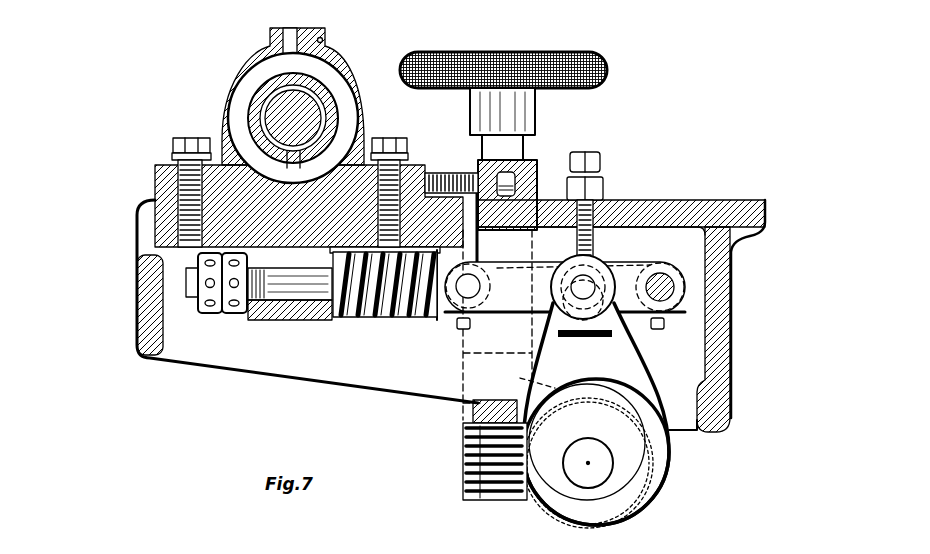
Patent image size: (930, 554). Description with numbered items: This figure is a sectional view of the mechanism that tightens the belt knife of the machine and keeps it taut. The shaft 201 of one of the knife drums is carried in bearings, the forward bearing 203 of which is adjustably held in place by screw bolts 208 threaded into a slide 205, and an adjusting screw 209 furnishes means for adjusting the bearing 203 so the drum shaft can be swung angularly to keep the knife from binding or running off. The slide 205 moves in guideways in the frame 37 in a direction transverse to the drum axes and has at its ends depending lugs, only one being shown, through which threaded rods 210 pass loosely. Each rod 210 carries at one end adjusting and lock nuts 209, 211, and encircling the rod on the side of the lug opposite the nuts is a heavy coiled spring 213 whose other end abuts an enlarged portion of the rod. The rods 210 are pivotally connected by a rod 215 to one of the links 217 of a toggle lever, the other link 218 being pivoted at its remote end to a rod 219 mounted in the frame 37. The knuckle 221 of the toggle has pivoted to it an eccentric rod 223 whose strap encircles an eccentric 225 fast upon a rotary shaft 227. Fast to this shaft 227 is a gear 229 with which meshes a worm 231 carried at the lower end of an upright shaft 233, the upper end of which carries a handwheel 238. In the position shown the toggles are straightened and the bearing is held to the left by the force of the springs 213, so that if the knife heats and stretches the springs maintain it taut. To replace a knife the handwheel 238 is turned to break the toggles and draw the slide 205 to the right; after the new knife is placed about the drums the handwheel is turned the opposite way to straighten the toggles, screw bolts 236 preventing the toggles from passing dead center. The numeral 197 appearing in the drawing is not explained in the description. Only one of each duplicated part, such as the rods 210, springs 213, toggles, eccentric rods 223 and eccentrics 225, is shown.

The frame 37 is at (718, 310).
The shaft 197 is at (231, 546).
The shaft 201 is at (327, 100).
The forward bearing 203 is at (227, 127).
The slide 205 is at (312, 320).
The screw bolts 208 is at (190, 145).
The adjusting screw 209 is at (510, 177).
The threaded rods 210 is at (283, 322).
The lock nut 211 is at (208, 320).
The coiled springs 213 is at (395, 318).
The rod 215 is at (467, 297).
The links 217 is at (500, 303).
The links 218 is at (602, 318).
The rod 219 is at (673, 283).
The knuckles 221 is at (595, 282).
The eccentric rods 223 is at (660, 443).
The eccentrics 225 is at (620, 473).
The rotary shaft 227 is at (587, 470).
The gear 229 is at (540, 500).
The worm 231 is at (487, 487).
The upright shaft 233 is at (523, 152).
The screw bolts 236 is at (600, 161).
The handwheel 238 is at (533, 70).